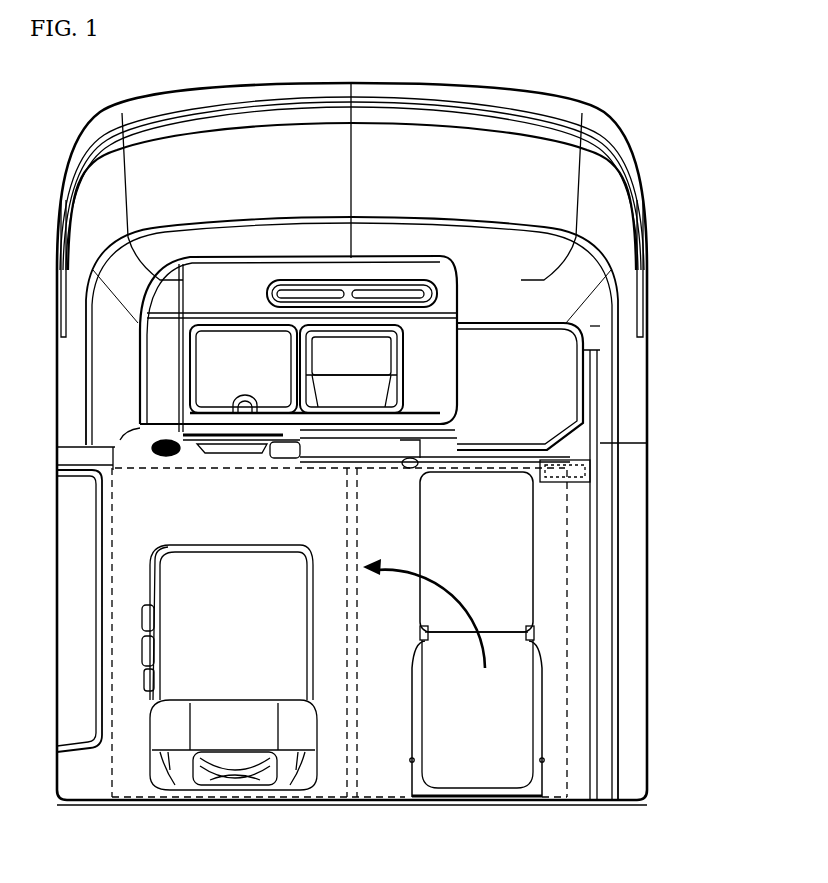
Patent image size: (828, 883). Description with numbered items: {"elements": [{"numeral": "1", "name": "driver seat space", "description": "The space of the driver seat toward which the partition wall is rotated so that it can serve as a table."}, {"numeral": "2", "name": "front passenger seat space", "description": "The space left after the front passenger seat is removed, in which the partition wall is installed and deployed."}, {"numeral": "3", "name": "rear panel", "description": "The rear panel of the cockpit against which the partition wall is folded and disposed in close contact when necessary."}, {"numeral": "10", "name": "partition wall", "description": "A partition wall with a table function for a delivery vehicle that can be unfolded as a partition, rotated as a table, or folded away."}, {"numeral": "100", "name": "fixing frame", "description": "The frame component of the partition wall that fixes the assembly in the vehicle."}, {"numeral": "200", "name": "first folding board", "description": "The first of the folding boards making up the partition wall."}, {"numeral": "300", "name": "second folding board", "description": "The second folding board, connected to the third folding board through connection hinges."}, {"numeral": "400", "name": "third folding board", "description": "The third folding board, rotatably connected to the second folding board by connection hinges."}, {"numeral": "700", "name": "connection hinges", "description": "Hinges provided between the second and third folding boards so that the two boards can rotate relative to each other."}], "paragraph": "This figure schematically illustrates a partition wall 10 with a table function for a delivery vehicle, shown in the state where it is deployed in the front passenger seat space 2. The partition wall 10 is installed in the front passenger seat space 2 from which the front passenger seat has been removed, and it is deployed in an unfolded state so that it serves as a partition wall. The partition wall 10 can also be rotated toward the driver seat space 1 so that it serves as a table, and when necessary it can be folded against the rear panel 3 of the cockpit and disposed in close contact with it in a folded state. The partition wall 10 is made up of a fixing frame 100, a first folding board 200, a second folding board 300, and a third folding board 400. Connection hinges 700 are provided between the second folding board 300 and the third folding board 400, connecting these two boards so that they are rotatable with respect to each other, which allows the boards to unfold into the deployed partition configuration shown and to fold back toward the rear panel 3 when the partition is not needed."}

The driver seat 1 is at (283, 800).
The passenger seat area 2 is at (370, 800).
The storage unit 3 is at (559, 675).
The vehicle interior space 10 is at (562, 680).
The base 100 is at (520, 800).
The support frame 200 is at (418, 800).
The lower storage box 300 is at (500, 730).
The upper cover 400 is at (500, 556).
The hinge unit 700 is at (534, 633).